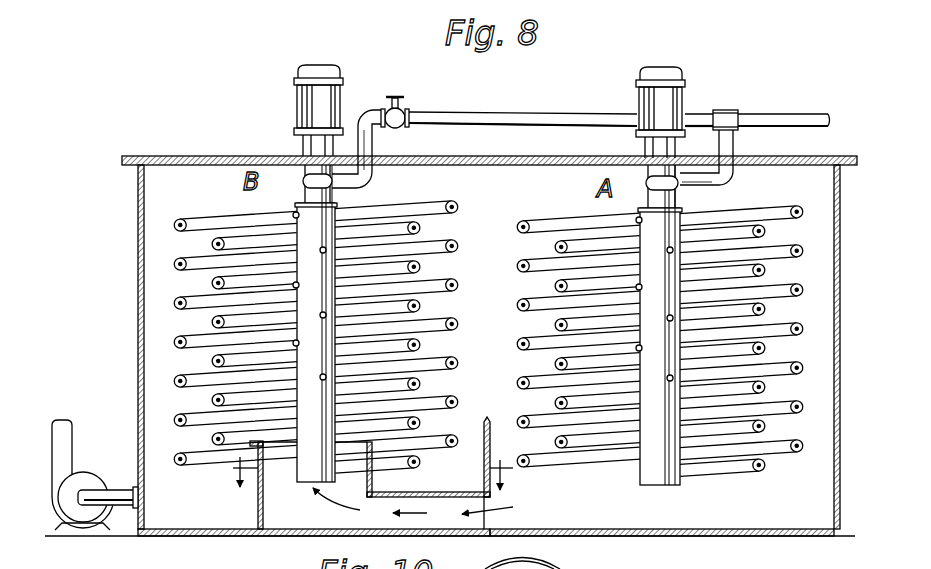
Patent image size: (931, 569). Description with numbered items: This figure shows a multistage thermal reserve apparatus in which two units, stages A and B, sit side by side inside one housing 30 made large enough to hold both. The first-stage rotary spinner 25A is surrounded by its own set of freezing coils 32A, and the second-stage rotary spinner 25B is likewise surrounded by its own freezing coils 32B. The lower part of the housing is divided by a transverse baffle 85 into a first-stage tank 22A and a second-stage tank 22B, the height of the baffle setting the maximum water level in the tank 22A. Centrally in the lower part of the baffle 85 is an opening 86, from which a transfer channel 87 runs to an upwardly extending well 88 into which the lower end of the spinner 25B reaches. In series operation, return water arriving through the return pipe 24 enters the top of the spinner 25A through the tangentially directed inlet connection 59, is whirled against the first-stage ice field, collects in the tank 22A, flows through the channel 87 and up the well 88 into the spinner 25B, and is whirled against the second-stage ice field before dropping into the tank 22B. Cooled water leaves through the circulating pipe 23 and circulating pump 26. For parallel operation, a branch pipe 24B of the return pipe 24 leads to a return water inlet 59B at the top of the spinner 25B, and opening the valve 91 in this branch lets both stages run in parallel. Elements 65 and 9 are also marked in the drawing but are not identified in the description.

The housing 30 is at (451, 346).
The circulating pump 26 is at (80, 477).
The circulating pipe 23 is at (119, 492).
The return pipe 24 is at (780, 114).
The branch pipe 24B is at (512, 112).
The valve 91 is at (405, 112).
The tangentially directed inlet connection 59 is at (733, 187).
The return water inlet 59B is at (372, 187).
The rotary spinner 25A is at (660, 287).
The rotary spinner 25B is at (312, 284).
The nozzles 65 is at (322, 387).
The freezing coils 32A is at (540, 470).
The freezing coils 32B is at (215, 447).
The tank 22A is at (662, 518).
The tank 22B is at (287, 485).
The transverse baffle 85 is at (487, 418).
The opening 86 is at (490, 502).
The transfer channel 87 is at (432, 510).
The well 88 is at (357, 480).
The liquid level 9 is at (362, 462).